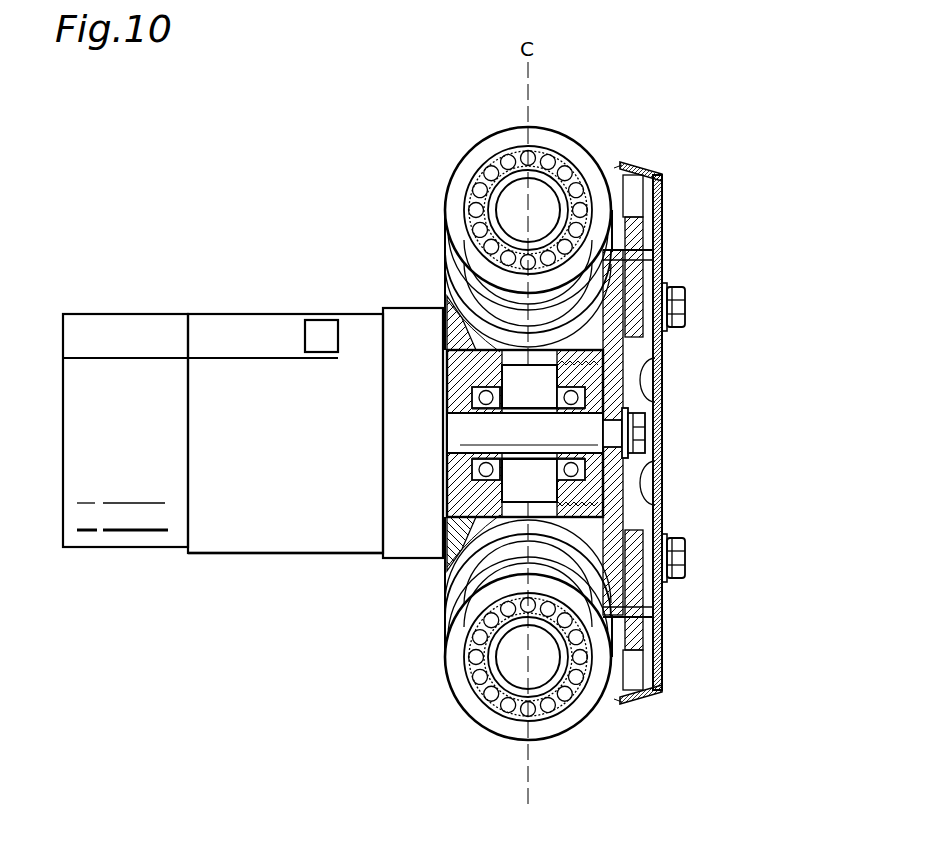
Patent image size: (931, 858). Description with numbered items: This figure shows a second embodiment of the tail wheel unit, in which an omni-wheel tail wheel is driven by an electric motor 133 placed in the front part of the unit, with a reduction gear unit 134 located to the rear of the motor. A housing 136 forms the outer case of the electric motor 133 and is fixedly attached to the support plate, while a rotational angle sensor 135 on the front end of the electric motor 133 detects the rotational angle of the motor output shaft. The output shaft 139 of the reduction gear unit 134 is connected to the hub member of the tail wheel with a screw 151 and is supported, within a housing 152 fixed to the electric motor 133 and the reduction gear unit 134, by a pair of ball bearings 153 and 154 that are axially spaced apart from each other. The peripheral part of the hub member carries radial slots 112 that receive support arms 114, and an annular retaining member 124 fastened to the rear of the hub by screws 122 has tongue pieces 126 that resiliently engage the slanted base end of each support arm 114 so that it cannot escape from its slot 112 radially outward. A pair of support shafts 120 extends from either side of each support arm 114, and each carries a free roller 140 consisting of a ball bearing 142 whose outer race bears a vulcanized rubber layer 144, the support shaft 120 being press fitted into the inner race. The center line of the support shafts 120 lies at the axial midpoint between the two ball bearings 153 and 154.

The radial slot 112 is at (640, 228).
The support arm 114 is at (616, 170).
The support shaft 120 is at (518, 203).
The screw 122 is at (678, 307).
The annular retaining member 124 is at (662, 418).
The tongue piece 126 is at (655, 177).
The electric motor 133 is at (263, 368).
The reduction gear unit 134 is at (416, 556).
The rotational angle sensor 135 is at (150, 368).
The housing 136 is at (262, 548).
The output shaft 139 is at (605, 462).
The free roller 140 is at (562, 125).
The ball bearing 142 is at (474, 194).
The rubber layer 144 is at (514, 135).
The screw 151 is at (638, 435).
The housing 152 is at (450, 288).
The ball bearing 153 is at (615, 400).
The ball bearing 154 is at (447, 400).